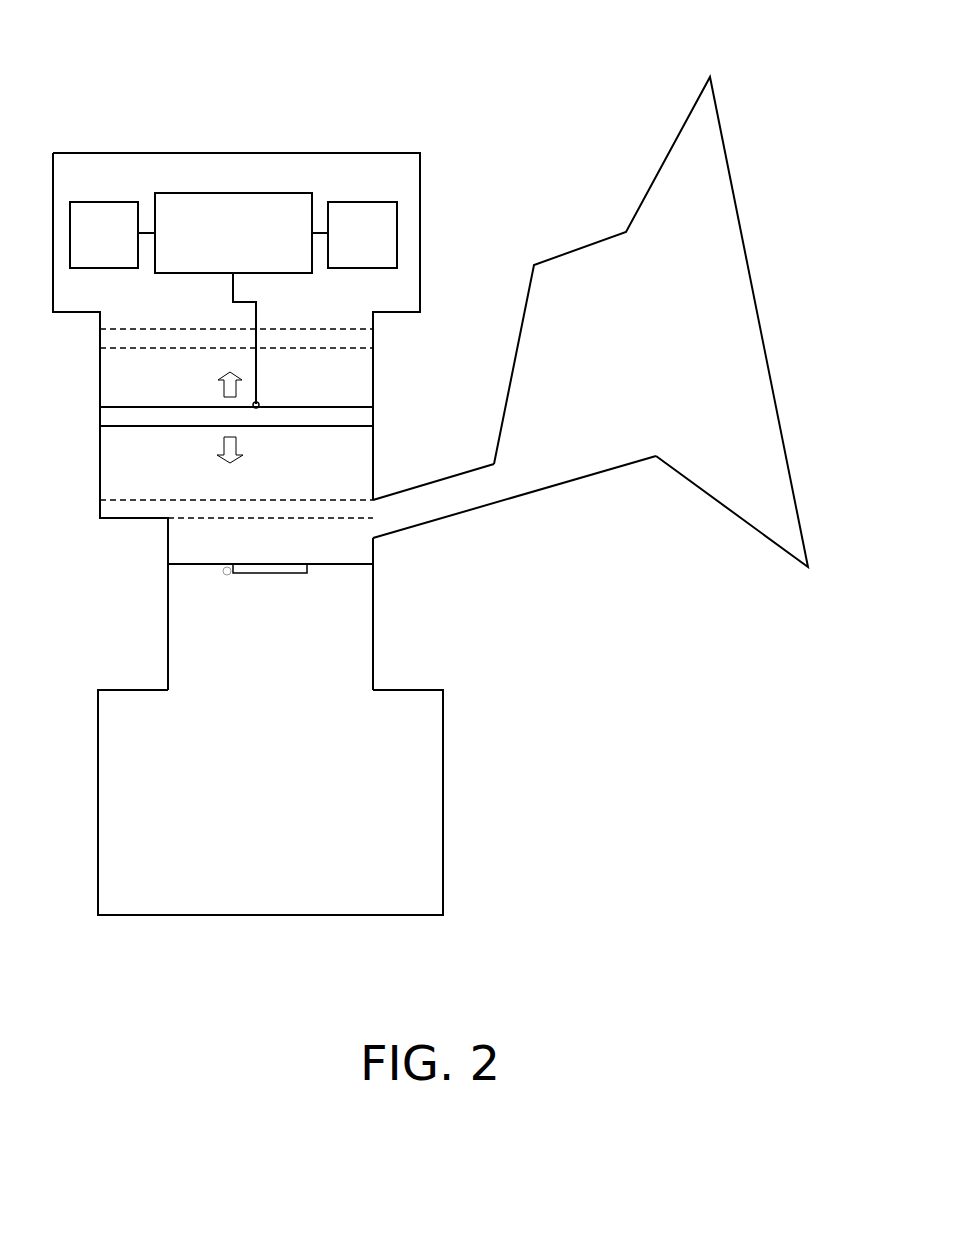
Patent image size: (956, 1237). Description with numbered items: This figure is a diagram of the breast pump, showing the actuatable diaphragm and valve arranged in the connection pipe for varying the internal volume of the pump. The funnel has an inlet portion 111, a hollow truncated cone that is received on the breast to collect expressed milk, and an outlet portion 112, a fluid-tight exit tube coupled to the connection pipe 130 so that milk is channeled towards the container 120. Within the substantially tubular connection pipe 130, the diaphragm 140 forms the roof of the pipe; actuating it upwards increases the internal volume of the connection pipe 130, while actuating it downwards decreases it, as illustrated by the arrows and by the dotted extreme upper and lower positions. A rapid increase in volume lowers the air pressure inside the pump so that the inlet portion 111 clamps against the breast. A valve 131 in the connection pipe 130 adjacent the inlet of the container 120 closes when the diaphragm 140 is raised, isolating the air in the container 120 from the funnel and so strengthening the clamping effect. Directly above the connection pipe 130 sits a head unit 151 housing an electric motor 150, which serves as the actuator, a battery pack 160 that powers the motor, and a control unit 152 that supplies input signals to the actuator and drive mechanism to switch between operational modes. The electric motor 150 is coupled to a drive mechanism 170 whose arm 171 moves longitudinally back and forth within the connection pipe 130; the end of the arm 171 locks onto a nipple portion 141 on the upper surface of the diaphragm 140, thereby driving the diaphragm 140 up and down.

The head unit 151 is at (188, 162).
The control unit 152 is at (86, 244).
The electric motor 150 is at (215, 244).
The battery pack 160 is at (344, 244).
The drive mechanism 170 is at (233, 282).
The arm 171 is at (256, 360).
The nipple portion 141 is at (259, 404).
The diaphragm 140 is at (355, 416).
The connection pipe 130 is at (337, 652).
The valve 131 is at (308, 570).
The container 120 is at (418, 803).
The outlet portion 112 is at (491, 497).
The inlet portion 111 is at (717, 215).